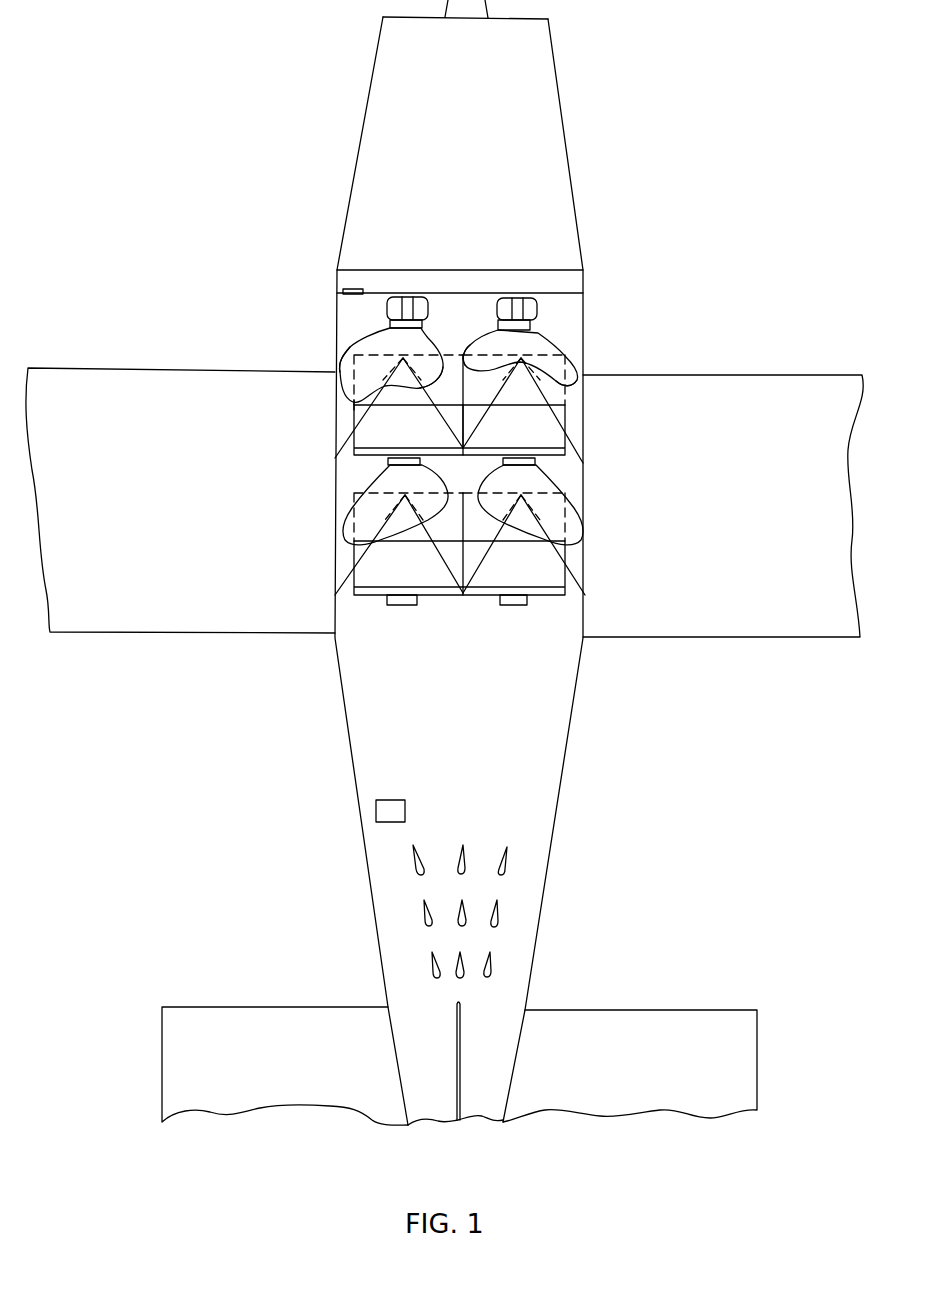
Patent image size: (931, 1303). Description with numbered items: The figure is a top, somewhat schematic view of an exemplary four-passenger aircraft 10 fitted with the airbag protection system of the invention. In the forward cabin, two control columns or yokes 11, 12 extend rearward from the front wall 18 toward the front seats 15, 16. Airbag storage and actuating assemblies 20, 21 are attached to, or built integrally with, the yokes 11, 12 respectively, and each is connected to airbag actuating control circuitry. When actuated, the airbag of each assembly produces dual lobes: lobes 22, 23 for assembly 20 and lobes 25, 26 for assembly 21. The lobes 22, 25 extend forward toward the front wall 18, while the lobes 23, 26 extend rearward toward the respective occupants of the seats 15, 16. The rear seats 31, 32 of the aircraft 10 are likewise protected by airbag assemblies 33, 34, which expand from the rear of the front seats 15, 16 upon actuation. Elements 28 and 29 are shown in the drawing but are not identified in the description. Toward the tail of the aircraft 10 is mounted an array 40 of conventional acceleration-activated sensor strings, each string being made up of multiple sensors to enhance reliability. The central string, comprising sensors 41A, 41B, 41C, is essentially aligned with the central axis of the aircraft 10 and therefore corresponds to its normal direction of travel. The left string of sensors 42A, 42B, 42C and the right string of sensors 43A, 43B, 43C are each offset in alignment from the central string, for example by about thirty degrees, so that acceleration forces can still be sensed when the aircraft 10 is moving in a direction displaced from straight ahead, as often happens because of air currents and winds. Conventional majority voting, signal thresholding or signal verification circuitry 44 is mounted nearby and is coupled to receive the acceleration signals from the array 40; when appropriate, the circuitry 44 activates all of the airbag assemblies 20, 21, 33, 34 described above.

The aircraft 10 is at (708, 150).
The control column or yoke 11 is at (387, 323).
The control column or yoke 12 is at (565, 326).
The seat 15 is at (365, 428).
The seat 16 is at (547, 432).
The front wall 18 is at (465, 275).
The airbag storage and actuating assembly 20 is at (357, 342).
The airbag storage and actuating assembly 21 is at (565, 319).
The airbag lobe 22 is at (440, 300).
The airbag lobe 23 is at (412, 355).
The airbag lobe 25 is at (553, 298).
The airbag lobe 26 is at (545, 347).
The support frame 28 is at (355, 400).
The partition 29 is at (445, 420).
The rear seat 31 is at (375, 570).
The rear seat 32 is at (545, 570).
The airbag assembly 33 is at (371, 468).
The airbag assembly 34 is at (563, 474).
The array of acceleration-activated sensor strings 40 is at (459, 767).
The sensor 41A is at (466, 845).
The sensor 41B is at (467, 910).
The sensor 41C is at (447, 978).
The sensor 42A is at (412, 862).
The sensor 42B is at (424, 912).
The sensor 42C is at (432, 962).
The sensor 43A is at (507, 857).
The sensor 43B is at (498, 915).
The sensor 43C is at (490, 967).
The circuitry 44 is at (375, 810).